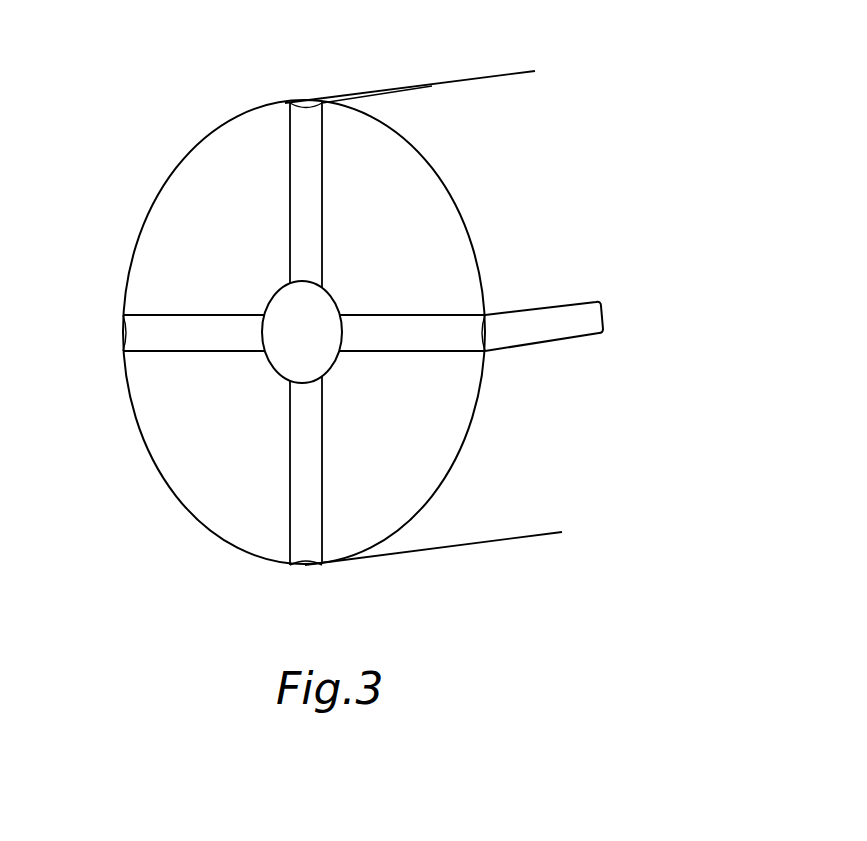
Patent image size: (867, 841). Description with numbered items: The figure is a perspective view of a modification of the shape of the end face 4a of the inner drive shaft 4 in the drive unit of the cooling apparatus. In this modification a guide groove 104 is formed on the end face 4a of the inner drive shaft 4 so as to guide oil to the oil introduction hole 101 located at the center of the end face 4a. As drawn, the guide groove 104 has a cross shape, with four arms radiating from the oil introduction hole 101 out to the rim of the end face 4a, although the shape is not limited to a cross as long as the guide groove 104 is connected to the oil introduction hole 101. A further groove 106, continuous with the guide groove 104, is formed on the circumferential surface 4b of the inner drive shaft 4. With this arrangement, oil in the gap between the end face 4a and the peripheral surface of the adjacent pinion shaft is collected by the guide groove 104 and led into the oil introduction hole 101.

The inner drive shaft 4 is at (192, 150).
The end face 4a is at (183, 252).
The circumferential surface 4b is at (485, 128).
The oil introduction hole 101 is at (290, 355).
The guide groove 104 is at (312, 138).
The groove 106 is at (542, 328).